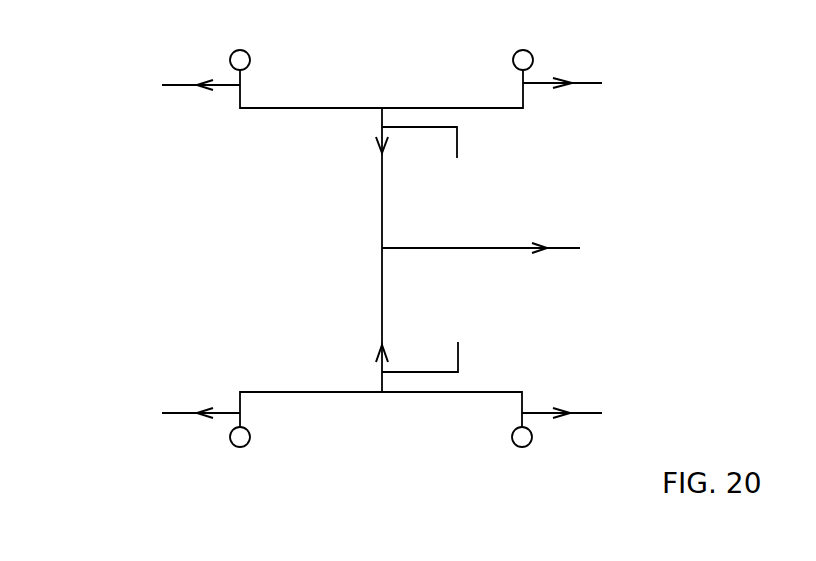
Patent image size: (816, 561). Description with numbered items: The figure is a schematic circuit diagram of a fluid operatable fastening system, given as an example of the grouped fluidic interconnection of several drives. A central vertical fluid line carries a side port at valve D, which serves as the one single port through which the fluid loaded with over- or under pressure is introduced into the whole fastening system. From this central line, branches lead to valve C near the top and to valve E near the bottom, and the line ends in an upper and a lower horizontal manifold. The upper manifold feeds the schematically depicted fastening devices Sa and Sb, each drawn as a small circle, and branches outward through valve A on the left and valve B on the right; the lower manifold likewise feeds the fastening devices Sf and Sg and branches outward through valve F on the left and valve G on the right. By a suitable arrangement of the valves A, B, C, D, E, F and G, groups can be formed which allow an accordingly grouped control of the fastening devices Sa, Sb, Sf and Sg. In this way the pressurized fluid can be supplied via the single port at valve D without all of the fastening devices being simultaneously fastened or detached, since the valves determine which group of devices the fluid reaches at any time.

The valve A is at (188, 89).
The valve B is at (583, 89).
The valve C is at (424, 163).
The valve D is at (500, 257).
The valve E is at (422, 343).
The valve F is at (188, 415).
The valve G is at (582, 416).
The fastening device Sa is at (245, 45).
The fastening device Sb is at (528, 45).
The fastening device Sf is at (242, 452).
The fastening device Sg is at (527, 454).